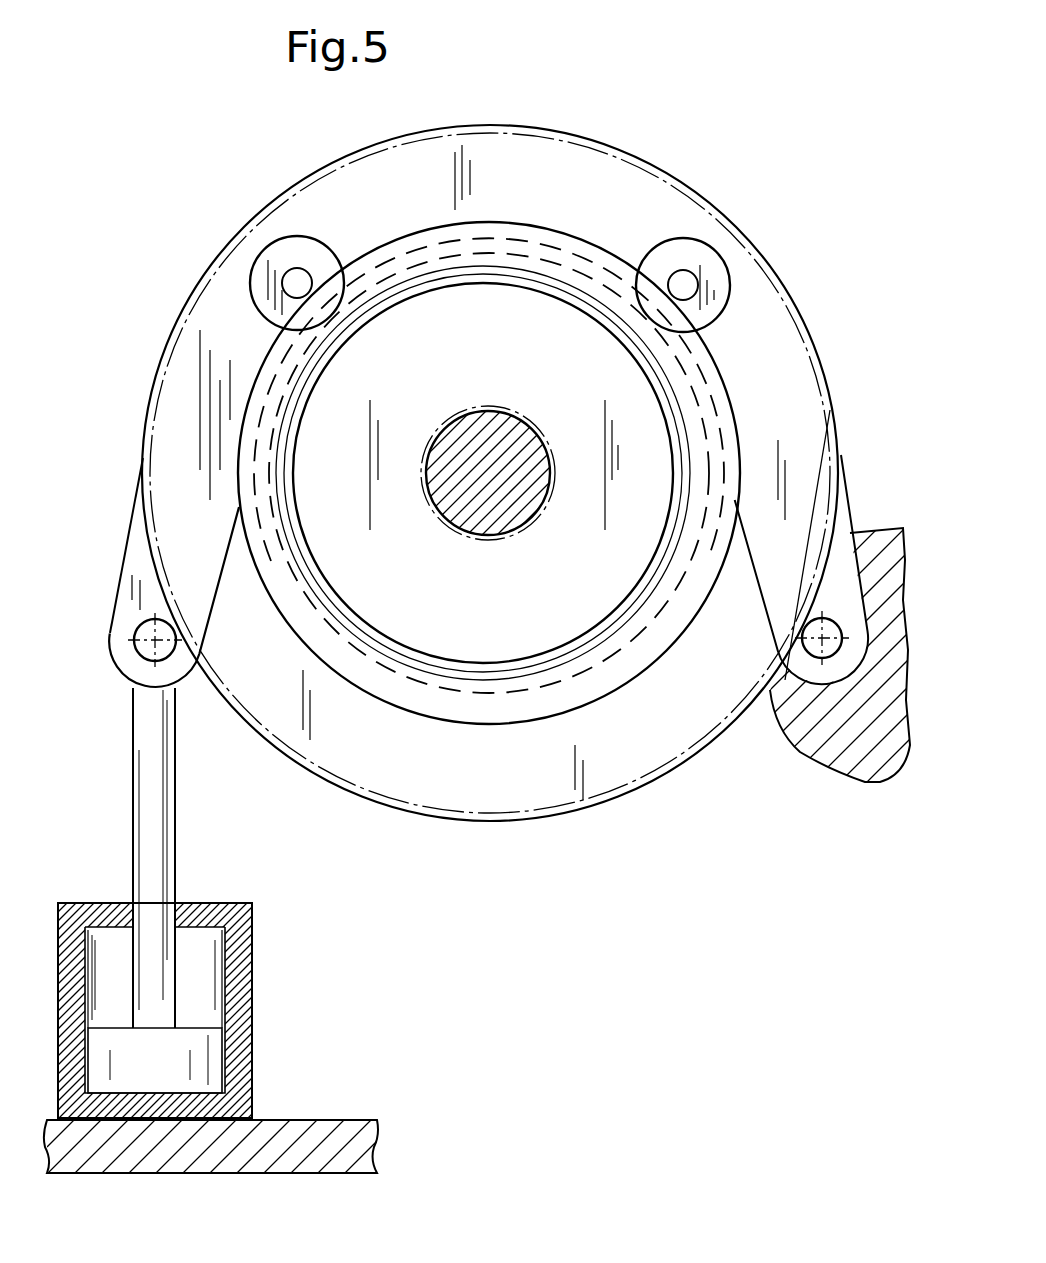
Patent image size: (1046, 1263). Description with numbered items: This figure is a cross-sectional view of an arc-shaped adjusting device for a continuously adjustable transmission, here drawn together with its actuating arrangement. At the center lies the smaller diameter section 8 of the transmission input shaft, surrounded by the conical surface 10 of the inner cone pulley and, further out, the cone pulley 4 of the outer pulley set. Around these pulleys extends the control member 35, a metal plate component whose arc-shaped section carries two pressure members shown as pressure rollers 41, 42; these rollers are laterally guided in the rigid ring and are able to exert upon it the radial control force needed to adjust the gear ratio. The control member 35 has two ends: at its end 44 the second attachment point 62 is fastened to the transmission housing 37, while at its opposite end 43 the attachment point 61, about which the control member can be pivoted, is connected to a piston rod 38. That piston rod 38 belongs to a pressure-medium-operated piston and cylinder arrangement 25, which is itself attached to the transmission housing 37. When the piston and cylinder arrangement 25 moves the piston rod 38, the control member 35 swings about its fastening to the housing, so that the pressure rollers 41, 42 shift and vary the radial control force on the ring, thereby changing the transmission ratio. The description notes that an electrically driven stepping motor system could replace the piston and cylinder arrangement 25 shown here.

The cone pulley 4 is at (618, 778).
The smaller diameter section of the transmission input shaft 8 is at (520, 500).
The conical surface 10 is at (585, 378).
The piston and cylinder arrangement 25 is at (238, 1015).
The control member 35 is at (135, 587).
The transmission housing 37 is at (318, 1135).
The piston rod 38 is at (158, 842).
The pressure roller 41 is at (710, 268).
The pressure roller 42 is at (278, 258).
The end of the control member 43 is at (128, 682).
The end of the control member 44 is at (833, 578).
The attachment point 61 is at (147, 637).
The second attachment point 62 is at (817, 652).